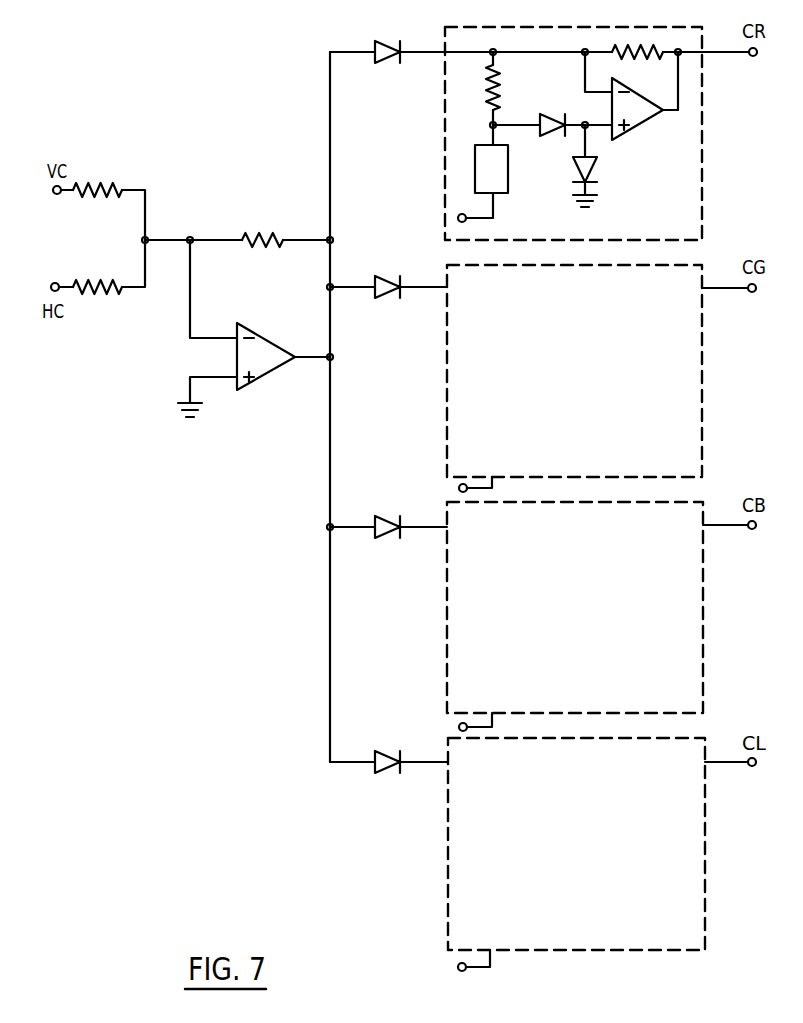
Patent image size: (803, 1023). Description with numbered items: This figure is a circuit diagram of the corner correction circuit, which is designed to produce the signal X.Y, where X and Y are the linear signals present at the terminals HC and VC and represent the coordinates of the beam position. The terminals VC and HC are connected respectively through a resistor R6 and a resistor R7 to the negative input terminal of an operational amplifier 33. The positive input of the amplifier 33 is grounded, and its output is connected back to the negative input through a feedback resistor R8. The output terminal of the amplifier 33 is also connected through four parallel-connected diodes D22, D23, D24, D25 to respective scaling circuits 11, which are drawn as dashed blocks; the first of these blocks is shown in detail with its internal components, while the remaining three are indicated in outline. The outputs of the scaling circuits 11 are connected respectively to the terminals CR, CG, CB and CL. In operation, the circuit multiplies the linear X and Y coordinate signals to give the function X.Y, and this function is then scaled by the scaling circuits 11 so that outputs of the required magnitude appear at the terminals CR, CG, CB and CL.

The scaling circuit 11 is at (702, 163).
The operational amplifier 33 is at (265, 380).
The diode D22 is at (387, 37).
The diode D23 is at (387, 275).
The diode D24 is at (387, 512).
The diode D25 is at (389, 750).
The resistor R6 is at (103, 197).
The resistor R7 is at (102, 267).
The resistor R8 is at (237, 227).